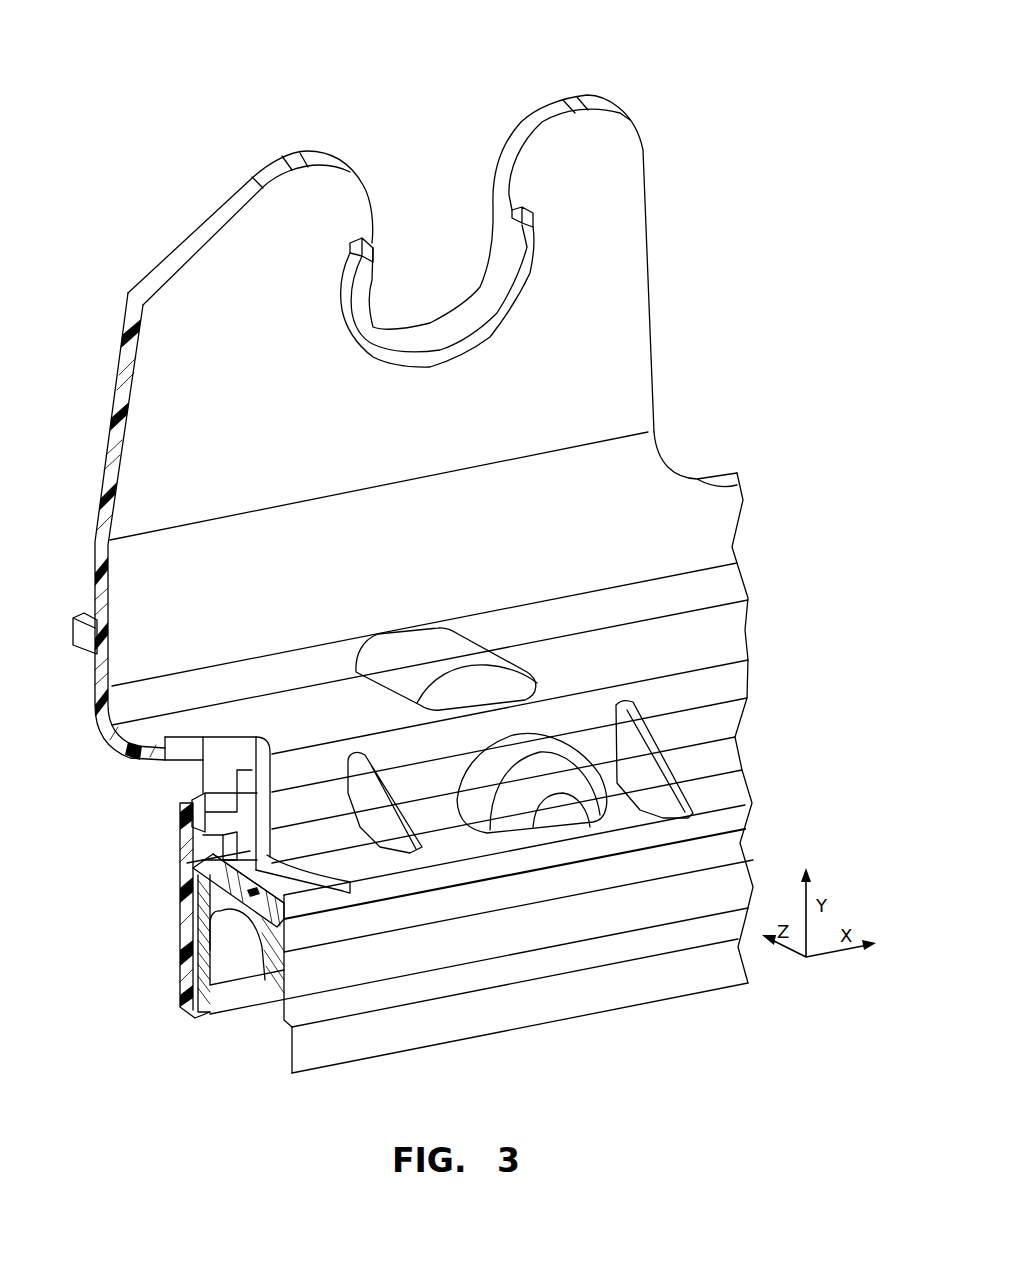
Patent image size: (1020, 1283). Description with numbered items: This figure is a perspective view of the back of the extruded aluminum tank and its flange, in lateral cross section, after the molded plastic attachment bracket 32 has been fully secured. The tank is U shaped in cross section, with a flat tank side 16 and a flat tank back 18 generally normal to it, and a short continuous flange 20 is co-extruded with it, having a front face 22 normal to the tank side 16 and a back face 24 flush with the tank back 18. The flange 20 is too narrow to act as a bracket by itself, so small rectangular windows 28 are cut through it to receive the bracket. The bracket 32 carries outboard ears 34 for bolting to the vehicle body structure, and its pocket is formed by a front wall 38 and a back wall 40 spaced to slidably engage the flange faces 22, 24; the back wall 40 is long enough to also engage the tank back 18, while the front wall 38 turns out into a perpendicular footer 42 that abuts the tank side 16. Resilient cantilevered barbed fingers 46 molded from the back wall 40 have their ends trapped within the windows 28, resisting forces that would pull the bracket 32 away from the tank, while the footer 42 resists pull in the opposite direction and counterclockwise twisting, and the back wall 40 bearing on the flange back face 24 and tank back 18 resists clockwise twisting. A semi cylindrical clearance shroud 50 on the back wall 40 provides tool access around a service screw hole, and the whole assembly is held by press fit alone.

The tank side 16 is at (280, 905).
The tank back 18 is at (185, 942).
The flange 20 is at (196, 786).
The flange front face 22 is at (232, 818).
The flange back face 24 is at (192, 800).
The windows 28 is at (210, 842).
The attachment bracket 32 is at (438, 492).
The outboard ears 34 is at (413, 539).
The front wall 38 is at (183, 905).
The back wall 40 is at (183, 903).
The footer 42 is at (247, 888).
The barbed finger 46 is at (188, 847).
The clearance shroud 50 is at (537, 748).